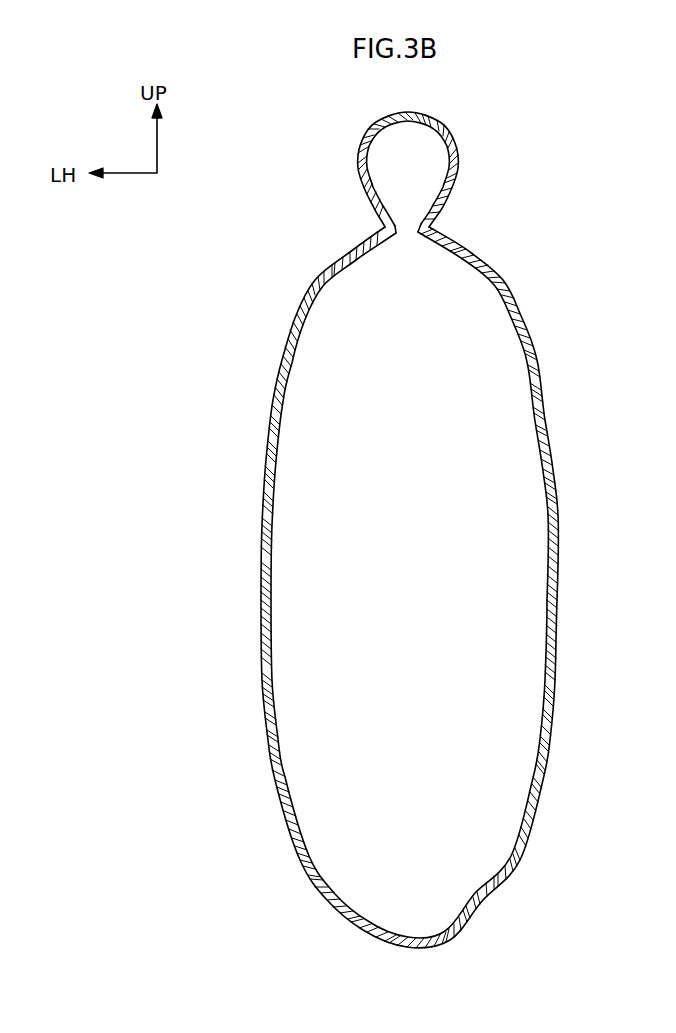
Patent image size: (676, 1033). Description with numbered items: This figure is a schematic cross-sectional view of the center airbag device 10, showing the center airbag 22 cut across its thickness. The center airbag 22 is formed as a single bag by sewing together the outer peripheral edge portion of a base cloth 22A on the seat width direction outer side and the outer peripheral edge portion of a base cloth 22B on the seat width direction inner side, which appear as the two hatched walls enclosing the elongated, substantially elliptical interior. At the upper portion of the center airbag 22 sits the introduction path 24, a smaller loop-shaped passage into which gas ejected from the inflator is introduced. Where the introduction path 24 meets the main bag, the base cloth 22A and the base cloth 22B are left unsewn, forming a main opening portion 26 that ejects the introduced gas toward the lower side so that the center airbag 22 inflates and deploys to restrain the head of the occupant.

The center airbag device 10 is at (272, 251).
The center airbag 22 is at (506, 268).
The base cloth 22A is at (262, 526).
The base cloth 22B is at (558, 513).
The introduction path 24 is at (462, 153).
The main opening portion 26 is at (394, 226).